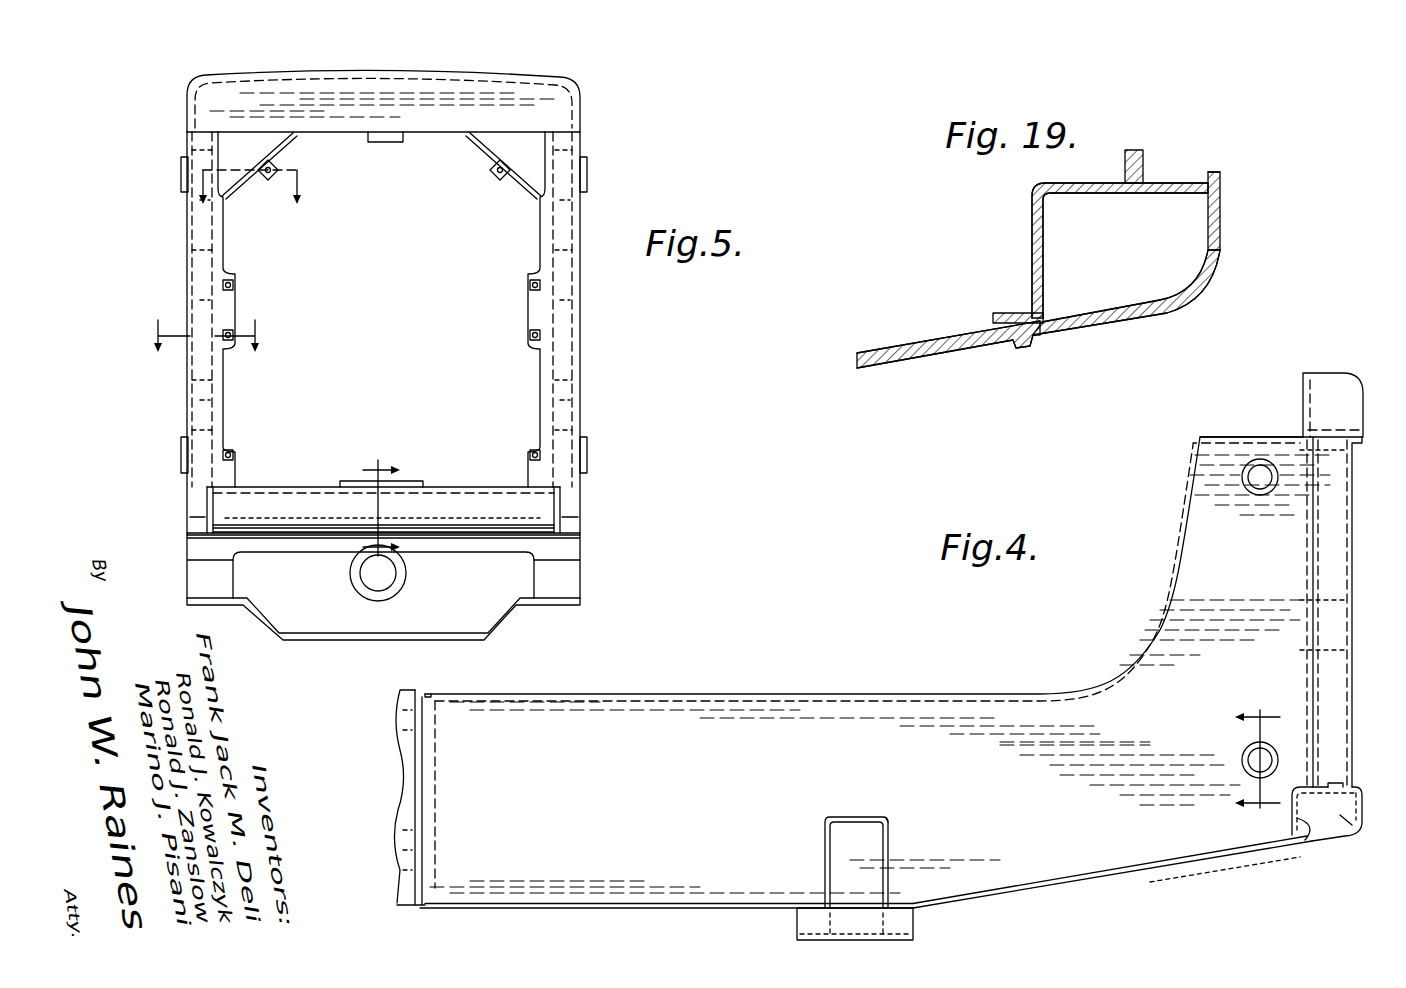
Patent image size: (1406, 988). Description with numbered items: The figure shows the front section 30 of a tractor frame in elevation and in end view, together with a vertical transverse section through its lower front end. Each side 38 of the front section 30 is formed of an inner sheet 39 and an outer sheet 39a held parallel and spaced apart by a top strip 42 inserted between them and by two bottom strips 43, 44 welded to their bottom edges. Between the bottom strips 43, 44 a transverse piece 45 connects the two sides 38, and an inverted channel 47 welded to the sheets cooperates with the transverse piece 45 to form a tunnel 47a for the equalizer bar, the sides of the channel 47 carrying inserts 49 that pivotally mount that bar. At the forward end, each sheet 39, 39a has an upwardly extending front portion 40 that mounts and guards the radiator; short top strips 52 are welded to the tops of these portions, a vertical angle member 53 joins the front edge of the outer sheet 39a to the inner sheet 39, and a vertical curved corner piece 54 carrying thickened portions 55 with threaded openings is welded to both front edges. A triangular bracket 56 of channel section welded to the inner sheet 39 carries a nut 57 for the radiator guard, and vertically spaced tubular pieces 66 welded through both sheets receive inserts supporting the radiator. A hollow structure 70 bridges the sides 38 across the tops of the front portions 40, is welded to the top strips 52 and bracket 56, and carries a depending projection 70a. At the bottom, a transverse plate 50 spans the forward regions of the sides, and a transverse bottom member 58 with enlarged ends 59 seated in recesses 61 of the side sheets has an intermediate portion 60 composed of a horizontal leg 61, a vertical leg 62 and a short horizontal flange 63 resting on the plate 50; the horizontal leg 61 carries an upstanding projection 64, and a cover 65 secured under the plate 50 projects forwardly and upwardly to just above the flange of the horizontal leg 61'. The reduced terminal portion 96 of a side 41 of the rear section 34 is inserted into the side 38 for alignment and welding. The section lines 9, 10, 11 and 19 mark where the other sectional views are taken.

In FIG. 4, the section line 9- 9 is at (1257, 760).
In FIG. 5, the section line 10- 10 is at (206, 336).
In FIG. 5, the section line 11- 11 is at (250, 198).
In FIG. 5, the section line 19- 19 is at (379, 494).
In FIG. 5, the front section 30 is at (180, 408).
In FIG. 4, the front section 30 is at (984, 690).
In FIG. 4, the rear section 34 is at (395, 895).
In FIG. 5, the side 38 is at (187, 375).
In FIG. 4, the side 38 is at (838, 690).
In FIG. 5, the inner sheet 39 is at (226, 250).
In FIG. 5, the outer sheet 39a is at (190, 270).
In FIG. 4, the upwardly extending front portion 40 is at (1222, 540).
In FIG. 4, the side 41 is at (418, 908).
In FIG. 4, the top strip 42 is at (720, 693).
In FIG. 4, the bottom strip 43 is at (658, 910).
In FIG. 4, the bottom strip 44 is at (1090, 889).
In FIG. 4, the transverse piece 45 is at (915, 926).
In FIG. 4, the inverted channel 47 is at (846, 816).
In FIG. 4, the tunnel 47a is at (890, 818).
In FIG. 5, the insert 49 is at (350, 590).
In FIG. 19, the transverse plate 50 is at (908, 345).
In FIG. 4, the transverse plate 50 is at (1228, 872).
In FIG. 4, the short top strip 52 is at (1252, 436).
In FIG. 4, the vertical angle member 53 is at (1320, 512).
In FIG. 5, the vertical curved corner piece 54 is at (196, 232).
In FIG. 4, the vertical curved corner piece 54 is at (1340, 560).
In FIG. 5, the thickened portion 55 is at (235, 287).
In FIG. 5, the triangular bracket 56 is at (283, 147).
In FIG. 5, the nut 57 is at (266, 181).
In FIG. 5, the transverse bottom member 58 is at (177, 522).
In FIG. 19, the transverse bottom member 58 is at (1028, 208).
In FIG. 4, the transverse bottom member 58 is at (1337, 836).
In FIG. 5, the enlarged end 59 is at (193, 497).
In FIG. 4, the enlarged end 59 is at (1342, 816).
In FIG. 5, the intermediate portion 60 is at (478, 481).
In FIG. 19, the intermediate portion 60 is at (1099, 184).
In FIG. 5, the horizontal leg 61 is at (382, 480).
In FIG. 4, the horizontal leg 61 is at (1305, 853).
In FIG. 19, the horizontal leg 61' is at (1232, 148).
In FIG. 19, the vertical leg 62 is at (1030, 244).
In FIG. 19, the short horizontal flange 63 is at (1003, 313).
In FIG. 5, the projection 64 is at (421, 481).
In FIG. 19, the projection 64 is at (1146, 158).
In FIG. 4, the projection 64 is at (1345, 784).
In FIG. 19, the cover 65 is at (1222, 249).
In FIG. 5, the short tubular piece 66 is at (180, 170).
In FIG. 4, the short tubular piece 66 is at (1242, 477).
In FIG. 5, the hollow structure 70 is at (230, 80).
In FIG. 4, the hollow structure 70 is at (1347, 380).
In FIG. 5, the depending projection 70a is at (386, 143).
In FIG. 4, the reduced terminal portion 96 is at (410, 740).